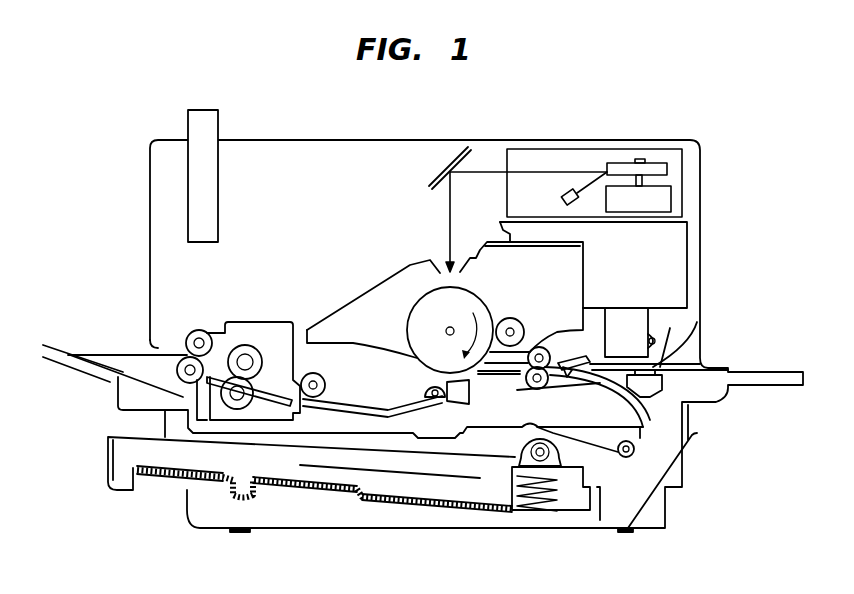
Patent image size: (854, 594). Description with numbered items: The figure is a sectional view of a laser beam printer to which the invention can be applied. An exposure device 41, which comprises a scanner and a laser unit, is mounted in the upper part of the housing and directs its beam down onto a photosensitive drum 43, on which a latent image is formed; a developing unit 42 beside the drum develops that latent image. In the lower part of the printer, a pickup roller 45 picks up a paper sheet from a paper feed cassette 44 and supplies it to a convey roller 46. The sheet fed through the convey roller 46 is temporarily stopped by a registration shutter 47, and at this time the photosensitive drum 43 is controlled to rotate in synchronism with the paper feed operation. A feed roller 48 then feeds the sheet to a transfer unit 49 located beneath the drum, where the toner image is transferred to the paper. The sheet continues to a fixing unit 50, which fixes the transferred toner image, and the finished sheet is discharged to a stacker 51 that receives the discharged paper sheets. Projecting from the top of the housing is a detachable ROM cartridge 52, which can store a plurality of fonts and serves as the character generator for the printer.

The exposure device 41 is at (683, 172).
The developing unit 42 is at (575, 293).
The photosensitive drum 43 is at (418, 295).
The paper feed cassette 44 is at (108, 452).
The pickup roller 45 is at (518, 450).
The convey roller 46 is at (620, 456).
The registration shutter 47 is at (560, 377).
The feed roller 48 is at (532, 386).
The transfer unit 49 is at (462, 396).
The fixing unit 50 is at (247, 330).
The stacker 51 is at (97, 357).
The detachable ROM cartridge 52 is at (205, 112).